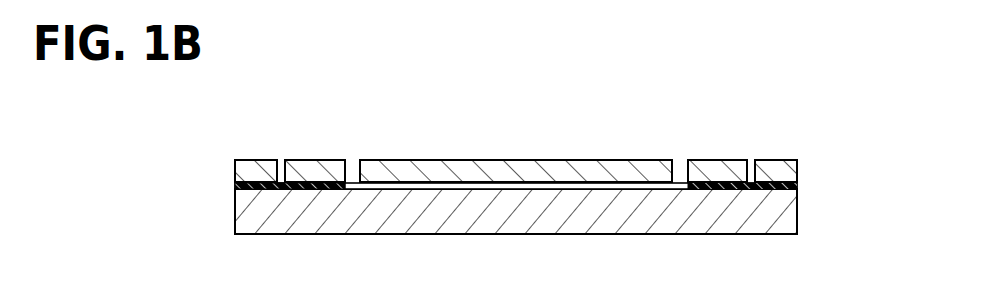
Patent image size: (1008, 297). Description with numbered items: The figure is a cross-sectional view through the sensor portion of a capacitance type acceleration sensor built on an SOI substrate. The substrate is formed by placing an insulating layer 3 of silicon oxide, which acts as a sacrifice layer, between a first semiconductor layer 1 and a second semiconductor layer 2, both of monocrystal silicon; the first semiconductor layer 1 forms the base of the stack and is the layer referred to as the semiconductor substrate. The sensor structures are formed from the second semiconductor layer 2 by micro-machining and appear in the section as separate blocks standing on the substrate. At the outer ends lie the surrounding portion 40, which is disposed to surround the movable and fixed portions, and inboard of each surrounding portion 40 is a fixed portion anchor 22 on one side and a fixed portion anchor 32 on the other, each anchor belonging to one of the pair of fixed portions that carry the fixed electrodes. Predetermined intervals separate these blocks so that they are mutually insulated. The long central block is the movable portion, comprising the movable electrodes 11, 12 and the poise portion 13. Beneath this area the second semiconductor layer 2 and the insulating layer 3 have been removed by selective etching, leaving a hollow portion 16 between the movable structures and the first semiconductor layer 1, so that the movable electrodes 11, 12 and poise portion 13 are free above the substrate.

The first semiconductor layer 1 is at (797, 212).
The second semiconductor layer 2 is at (797, 162).
The insulating layer 3 is at (235, 183).
The movable electrode 11 is at (388, 175).
The movable electrode 12 is at (630, 172).
The poise portion 13 is at (532, 171).
The hollow portion 16 is at (482, 187).
The fixed portion anchor 22 is at (308, 172).
The fixed portion anchor 32 is at (722, 172).
The surrounding portion 40 is at (249, 170).